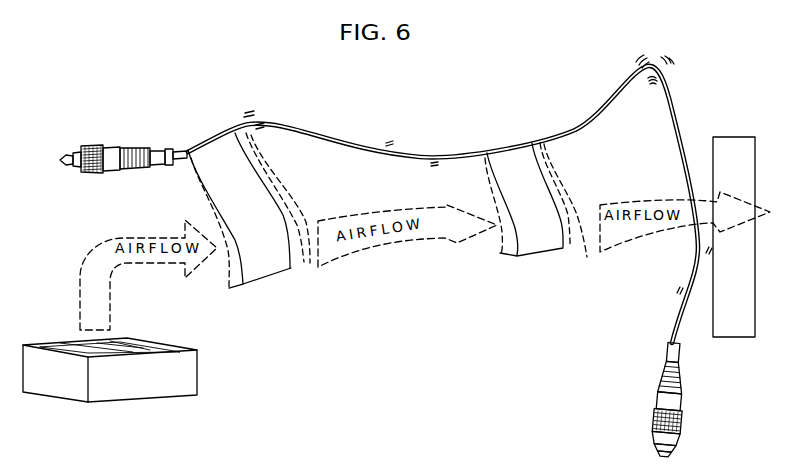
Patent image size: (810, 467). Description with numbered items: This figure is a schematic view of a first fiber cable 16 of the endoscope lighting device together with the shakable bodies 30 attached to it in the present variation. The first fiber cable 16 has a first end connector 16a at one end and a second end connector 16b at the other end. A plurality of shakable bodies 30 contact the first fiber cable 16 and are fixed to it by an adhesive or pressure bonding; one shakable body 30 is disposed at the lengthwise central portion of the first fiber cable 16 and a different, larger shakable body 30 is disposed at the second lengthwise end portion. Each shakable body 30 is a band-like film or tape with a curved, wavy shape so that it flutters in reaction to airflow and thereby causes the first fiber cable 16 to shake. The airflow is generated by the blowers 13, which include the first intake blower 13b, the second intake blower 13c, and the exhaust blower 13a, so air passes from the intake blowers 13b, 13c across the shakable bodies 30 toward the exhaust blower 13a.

The first fiber cable 16 is at (425, 152).
The first end connector 16a is at (668, 407).
The second end connector 16b is at (110, 153).
The shakable body 30 is at (229, 288).
The exhaust blower 13a is at (730, 143).
The first intake blower 13b is at (164, 370).
The second intake blower 13c is at (110, 370).
The blower 13 is at (178, 380).